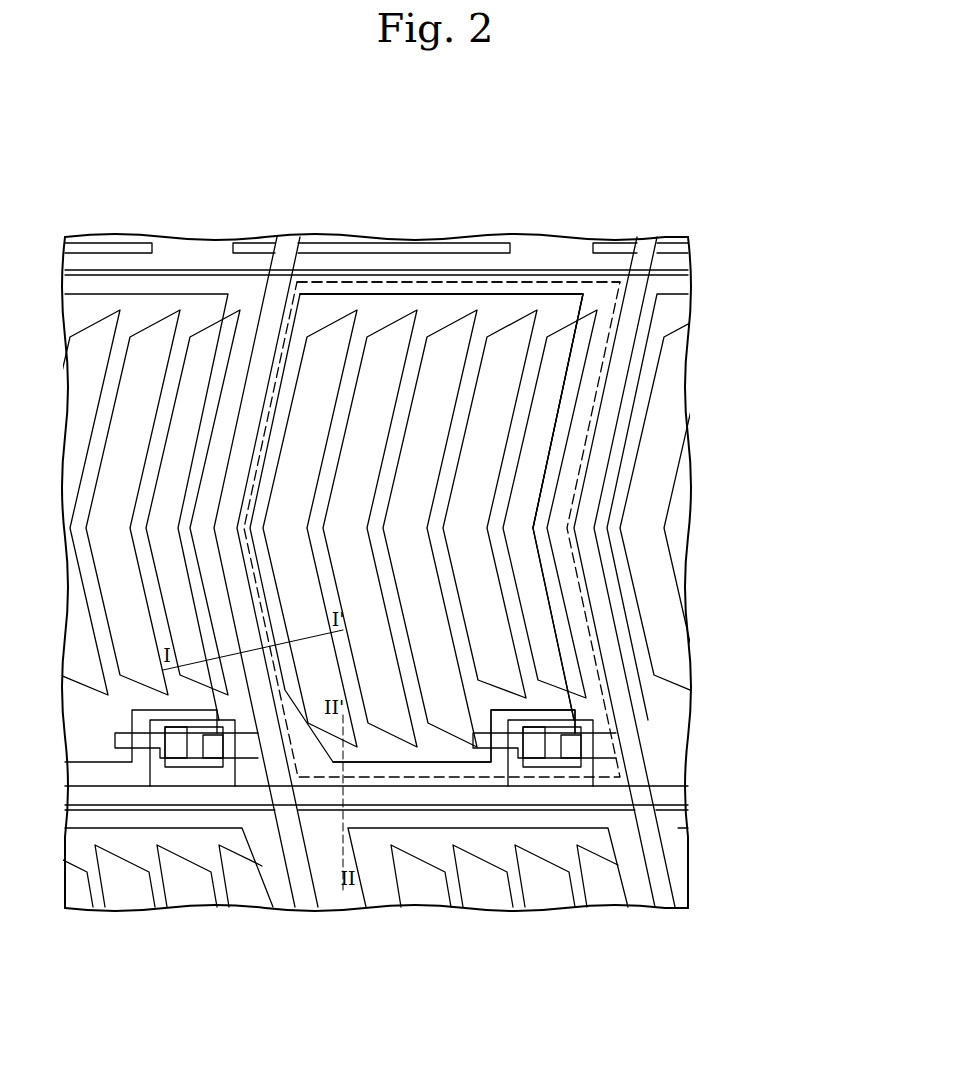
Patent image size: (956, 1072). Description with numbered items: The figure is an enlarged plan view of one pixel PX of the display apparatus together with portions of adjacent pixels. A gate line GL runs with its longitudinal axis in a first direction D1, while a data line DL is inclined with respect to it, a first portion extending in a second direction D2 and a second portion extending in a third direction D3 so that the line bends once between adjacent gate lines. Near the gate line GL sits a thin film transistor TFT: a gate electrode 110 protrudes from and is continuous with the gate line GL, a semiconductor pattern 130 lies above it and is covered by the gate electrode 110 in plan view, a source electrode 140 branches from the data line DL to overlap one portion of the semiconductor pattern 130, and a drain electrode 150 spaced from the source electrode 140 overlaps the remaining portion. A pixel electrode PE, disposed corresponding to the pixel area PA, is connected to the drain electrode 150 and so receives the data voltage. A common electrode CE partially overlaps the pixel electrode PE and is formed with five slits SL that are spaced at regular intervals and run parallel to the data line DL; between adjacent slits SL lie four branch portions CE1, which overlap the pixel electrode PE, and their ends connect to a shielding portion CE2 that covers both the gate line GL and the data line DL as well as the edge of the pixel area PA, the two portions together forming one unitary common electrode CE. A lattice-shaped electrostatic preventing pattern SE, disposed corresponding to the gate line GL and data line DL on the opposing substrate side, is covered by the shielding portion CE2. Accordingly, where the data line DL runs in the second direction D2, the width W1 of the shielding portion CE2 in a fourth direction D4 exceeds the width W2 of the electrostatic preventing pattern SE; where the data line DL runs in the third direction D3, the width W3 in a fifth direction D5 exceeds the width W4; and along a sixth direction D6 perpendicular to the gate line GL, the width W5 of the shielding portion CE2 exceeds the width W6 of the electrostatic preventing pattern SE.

The electrostatic preventing pattern SE is at (306, 237).
The pixel area PA is at (414, 280).
The pixel PX is at (473, 290).
The pixel electrode PE is at (526, 296).
The common electrode CE is at (768, 300).
The branch portion CE1 is at (530, 383).
The shielding portion CE2 is at (583, 290).
The slits SL is at (497, 442).
The thin film transistor TFT is at (768, 633).
The gate electrode 110 is at (517, 722).
The drain electrode 150 is at (533, 742).
The semiconductor pattern 130 is at (552, 737).
The source electrode 140 is at (573, 740).
The gate line GL is at (680, 795).
The data line DL is at (665, 890).
The width of the shielding portion in the fourth direction W1 is at (288, 421).
The width of the electrostatic preventing pattern in the fourth direction W2 is at (232, 453).
The width of the shielding portion in the fifth direction W3 is at (278, 608).
The width of the electrostatic preventing pattern in the fifth direction W4 is at (225, 578).
The width of the shielding portion in the sixth direction W5 is at (405, 745).
The width of the electrostatic preventing pattern in the sixth direction W6 is at (463, 787).
The first direction D1 is at (548, 1007).
The second direction D2 is at (583, 1057).
The third direction D3 is at (605, 1057).
The fourth direction D4 is at (465, 1018).
The fifth direction D5 is at (362, 1020).
The sixth direction D6 is at (413, 1055).